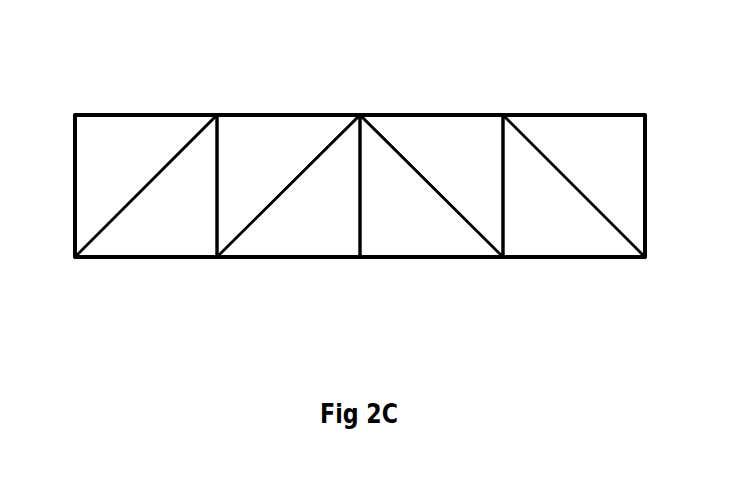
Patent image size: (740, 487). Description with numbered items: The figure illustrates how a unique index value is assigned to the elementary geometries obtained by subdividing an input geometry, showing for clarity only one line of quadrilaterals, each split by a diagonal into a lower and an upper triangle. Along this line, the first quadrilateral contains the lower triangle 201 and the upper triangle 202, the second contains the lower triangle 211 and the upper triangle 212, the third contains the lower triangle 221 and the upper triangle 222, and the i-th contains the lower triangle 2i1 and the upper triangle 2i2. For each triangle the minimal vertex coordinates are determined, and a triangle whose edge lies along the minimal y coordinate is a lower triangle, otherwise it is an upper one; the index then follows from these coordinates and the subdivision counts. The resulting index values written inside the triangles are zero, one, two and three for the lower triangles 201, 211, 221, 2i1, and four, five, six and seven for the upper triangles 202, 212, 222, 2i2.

The triangle 202 is at (153, 140).
The triangle 201 is at (140, 238).
The triangle 212 is at (293, 133).
The triangle 211 is at (280, 235).
The triangle 222 is at (437, 138).
The triangle 221 is at (422, 235).
The triangle 2i2 is at (572, 132).
The triangle 2i1 is at (568, 232).